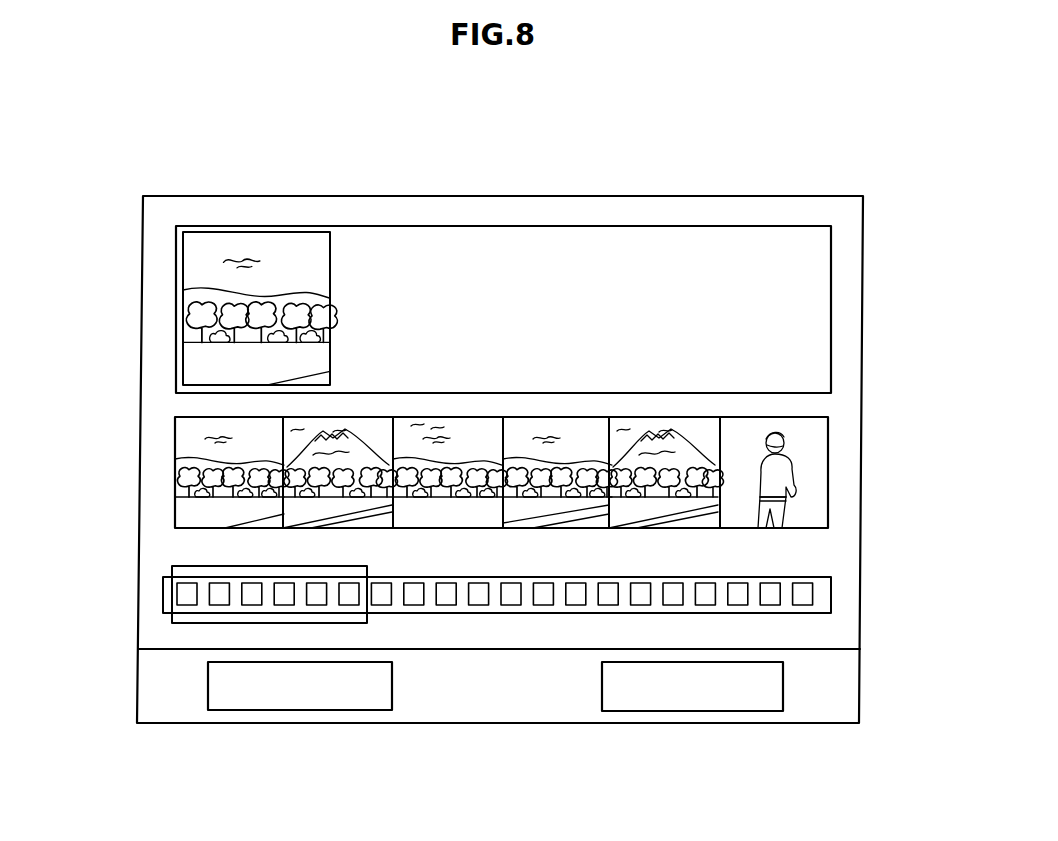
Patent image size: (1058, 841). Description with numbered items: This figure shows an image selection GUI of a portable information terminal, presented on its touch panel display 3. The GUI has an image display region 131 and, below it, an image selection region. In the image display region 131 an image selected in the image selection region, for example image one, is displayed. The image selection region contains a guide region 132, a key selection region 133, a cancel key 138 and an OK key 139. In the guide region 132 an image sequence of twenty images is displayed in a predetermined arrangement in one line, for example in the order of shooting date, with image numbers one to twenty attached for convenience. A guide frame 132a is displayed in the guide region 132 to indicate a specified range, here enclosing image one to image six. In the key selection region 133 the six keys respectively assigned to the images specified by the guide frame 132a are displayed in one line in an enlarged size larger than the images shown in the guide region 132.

The touch panel display 3 is at (848, 258).
The image display region 131 is at (663, 226).
The guide region 132 is at (163, 594).
The guide frame 132a is at (172, 572).
The key selection region 133 is at (845, 415).
The cancel key 138 is at (298, 711).
The OK key 139 is at (692, 712).